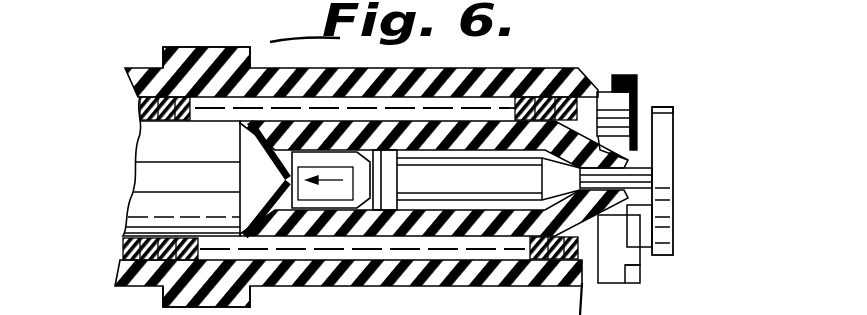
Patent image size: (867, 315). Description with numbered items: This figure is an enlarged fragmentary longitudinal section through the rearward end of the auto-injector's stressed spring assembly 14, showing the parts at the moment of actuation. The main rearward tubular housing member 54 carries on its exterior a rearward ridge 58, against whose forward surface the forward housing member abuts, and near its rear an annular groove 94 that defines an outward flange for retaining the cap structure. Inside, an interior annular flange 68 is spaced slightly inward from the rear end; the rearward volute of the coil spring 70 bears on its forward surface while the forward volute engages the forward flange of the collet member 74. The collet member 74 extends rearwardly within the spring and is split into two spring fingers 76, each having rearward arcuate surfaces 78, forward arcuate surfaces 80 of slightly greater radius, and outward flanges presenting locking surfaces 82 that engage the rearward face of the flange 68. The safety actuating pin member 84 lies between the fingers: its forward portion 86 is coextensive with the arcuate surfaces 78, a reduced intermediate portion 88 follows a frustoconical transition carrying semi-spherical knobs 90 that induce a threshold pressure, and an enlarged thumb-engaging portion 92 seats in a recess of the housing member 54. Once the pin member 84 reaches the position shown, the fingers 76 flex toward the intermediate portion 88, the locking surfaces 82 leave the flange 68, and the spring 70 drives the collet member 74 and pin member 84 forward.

The spring assembly 14 is at (148, 64).
The main rearward tubular housing member 54 is at (118, 270).
The rearward ridge 58 is at (230, 22).
The interior annular flange 68 is at (605, 240).
The coil spring 70 is at (142, 106).
The collet member 74 is at (126, 206).
The spring fingers 76 is at (550, 92).
The rearward arcuate surfaces 78 is at (603, 218).
The forward arcuate surfaces 80 is at (265, 133).
The locking surfaces 82 is at (576, 130).
The safety actuating pin member 84 is at (678, 128).
The forward portion 86 is at (381, 180).
The intermediate portion 88 is at (655, 172).
The semi-spherical knobs 90 is at (525, 179).
The thumb-engaging portion 92 is at (673, 108).
The annular groove 94 is at (618, 268).